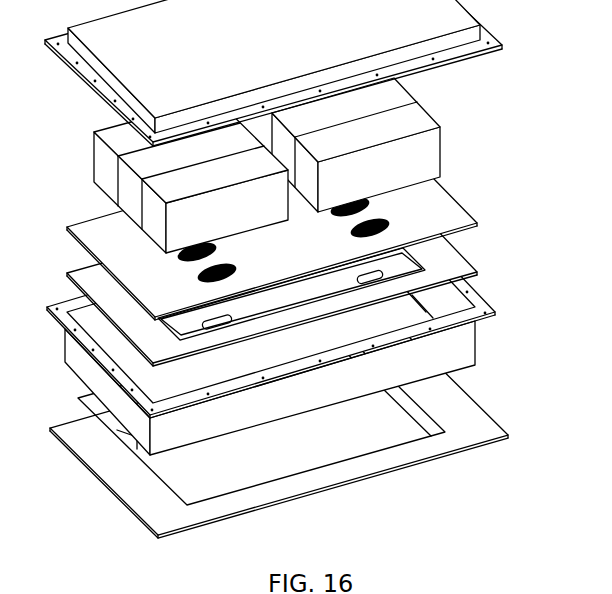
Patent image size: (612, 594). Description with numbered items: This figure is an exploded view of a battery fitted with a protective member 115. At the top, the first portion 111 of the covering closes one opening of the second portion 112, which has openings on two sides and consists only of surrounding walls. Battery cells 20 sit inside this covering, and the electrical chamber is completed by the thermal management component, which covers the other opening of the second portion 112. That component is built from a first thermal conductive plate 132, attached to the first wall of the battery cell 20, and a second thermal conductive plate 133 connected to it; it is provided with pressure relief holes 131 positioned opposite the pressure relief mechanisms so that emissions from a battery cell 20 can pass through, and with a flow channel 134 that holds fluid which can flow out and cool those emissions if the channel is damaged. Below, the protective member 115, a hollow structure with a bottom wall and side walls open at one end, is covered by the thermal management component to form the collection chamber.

The first portion 111 is at (462, 48).
The battery cell 20 is at (418, 127).
The first thermal conductive plate 132 is at (458, 216).
The pressure relief hole 131 is at (352, 236).
The flow channel 134 is at (403, 250).
The second thermal conductive plate 133 is at (304, 274).
The second portion 112 is at (467, 346).
The protective member 115 is at (488, 413).